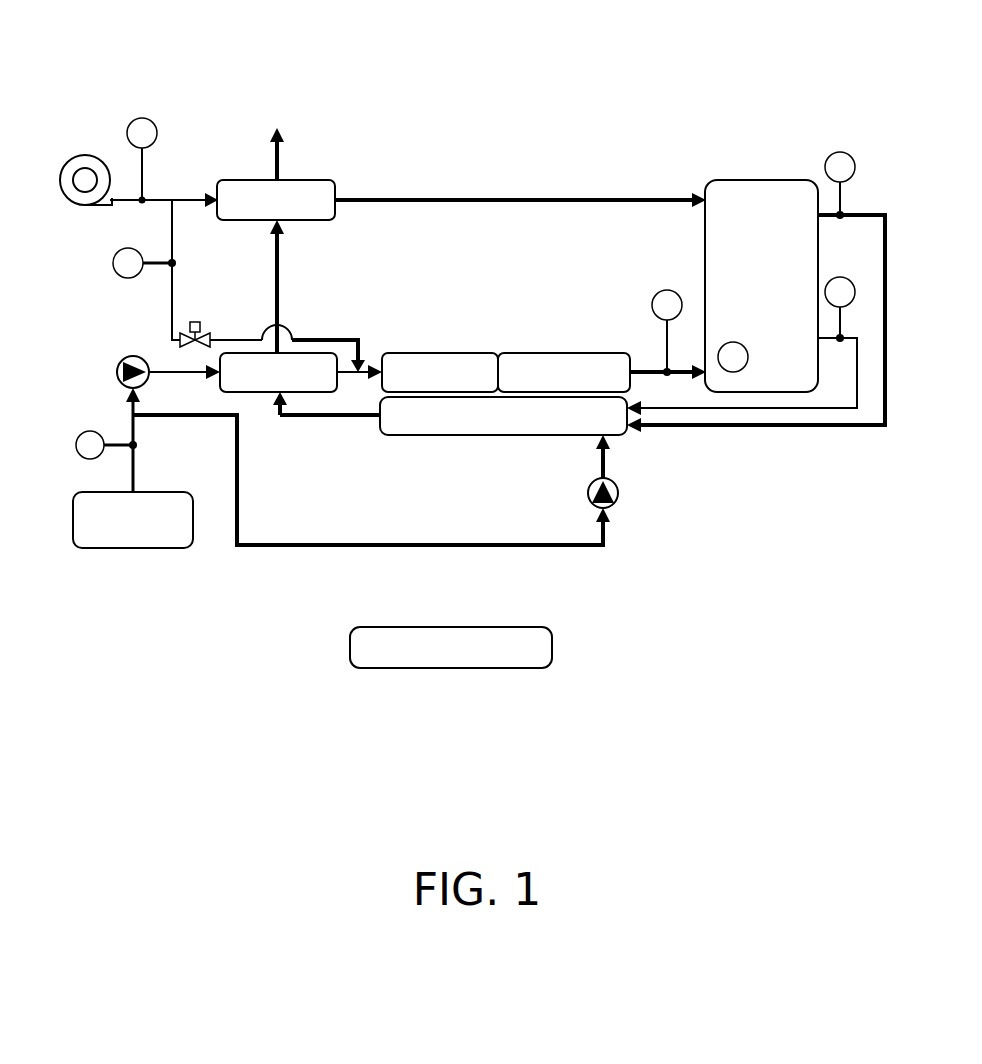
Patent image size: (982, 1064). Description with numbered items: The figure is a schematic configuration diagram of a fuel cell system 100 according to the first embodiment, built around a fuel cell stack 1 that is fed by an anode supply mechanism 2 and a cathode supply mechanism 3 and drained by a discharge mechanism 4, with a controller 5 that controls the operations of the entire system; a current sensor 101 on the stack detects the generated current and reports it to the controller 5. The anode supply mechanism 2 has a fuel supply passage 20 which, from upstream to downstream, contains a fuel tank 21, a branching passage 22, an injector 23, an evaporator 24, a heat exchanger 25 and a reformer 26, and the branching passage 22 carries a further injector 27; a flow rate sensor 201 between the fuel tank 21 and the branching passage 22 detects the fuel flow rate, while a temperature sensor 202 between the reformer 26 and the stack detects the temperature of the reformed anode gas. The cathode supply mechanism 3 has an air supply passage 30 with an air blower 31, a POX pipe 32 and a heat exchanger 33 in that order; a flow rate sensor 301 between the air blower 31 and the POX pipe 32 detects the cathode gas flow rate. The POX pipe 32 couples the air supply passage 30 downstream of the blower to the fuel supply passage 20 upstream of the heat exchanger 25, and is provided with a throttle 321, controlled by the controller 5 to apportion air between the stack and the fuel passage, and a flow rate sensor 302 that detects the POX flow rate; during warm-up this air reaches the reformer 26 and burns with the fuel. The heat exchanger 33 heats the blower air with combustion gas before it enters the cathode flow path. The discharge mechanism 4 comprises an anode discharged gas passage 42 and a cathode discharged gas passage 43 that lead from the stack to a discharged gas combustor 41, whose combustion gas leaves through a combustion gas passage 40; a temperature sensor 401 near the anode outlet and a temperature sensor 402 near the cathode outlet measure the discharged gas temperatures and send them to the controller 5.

The fuel cell system 100 is at (483, 94).
The fuel cell stack 1 is at (764, 178).
The current sensor 101 is at (725, 344).
The anode supply mechanism 2 is at (290, 582).
The fuel supply passage 20 is at (170, 364).
The fuel tank 21 is at (130, 550).
The branching passage 22 is at (516, 548).
The injector 23 is at (120, 358).
The evaporator 24 is at (250, 393).
The heat exchanger 25 is at (422, 353).
The reformer 26 is at (557, 353).
The injector 27 is at (616, 490).
The flow rate sensor 201 is at (80, 434).
The temperature sensor 202 is at (654, 296).
The cathode supply mechanism 3 is at (374, 166).
The air supply passage 30 is at (556, 198).
The air blower 31 is at (85, 156).
The POX pipe 32 is at (170, 218).
The heat exchanger 33 is at (306, 178).
The throttle 321 is at (198, 320).
The flow rate sensor 301 is at (136, 118).
The flow rate sensor 302 is at (112, 263).
The discharge mechanism 4 is at (722, 474).
The combustion gas passage 40 is at (282, 308).
The discharged gas combustor 41 is at (463, 437).
The anode discharged gas passage 42 is at (780, 410).
The cathode discharged gas passage 43 is at (830, 427).
The temperature sensor 401 is at (843, 277).
The temperature sensor 402 is at (843, 152).
The controller 5 is at (450, 670).